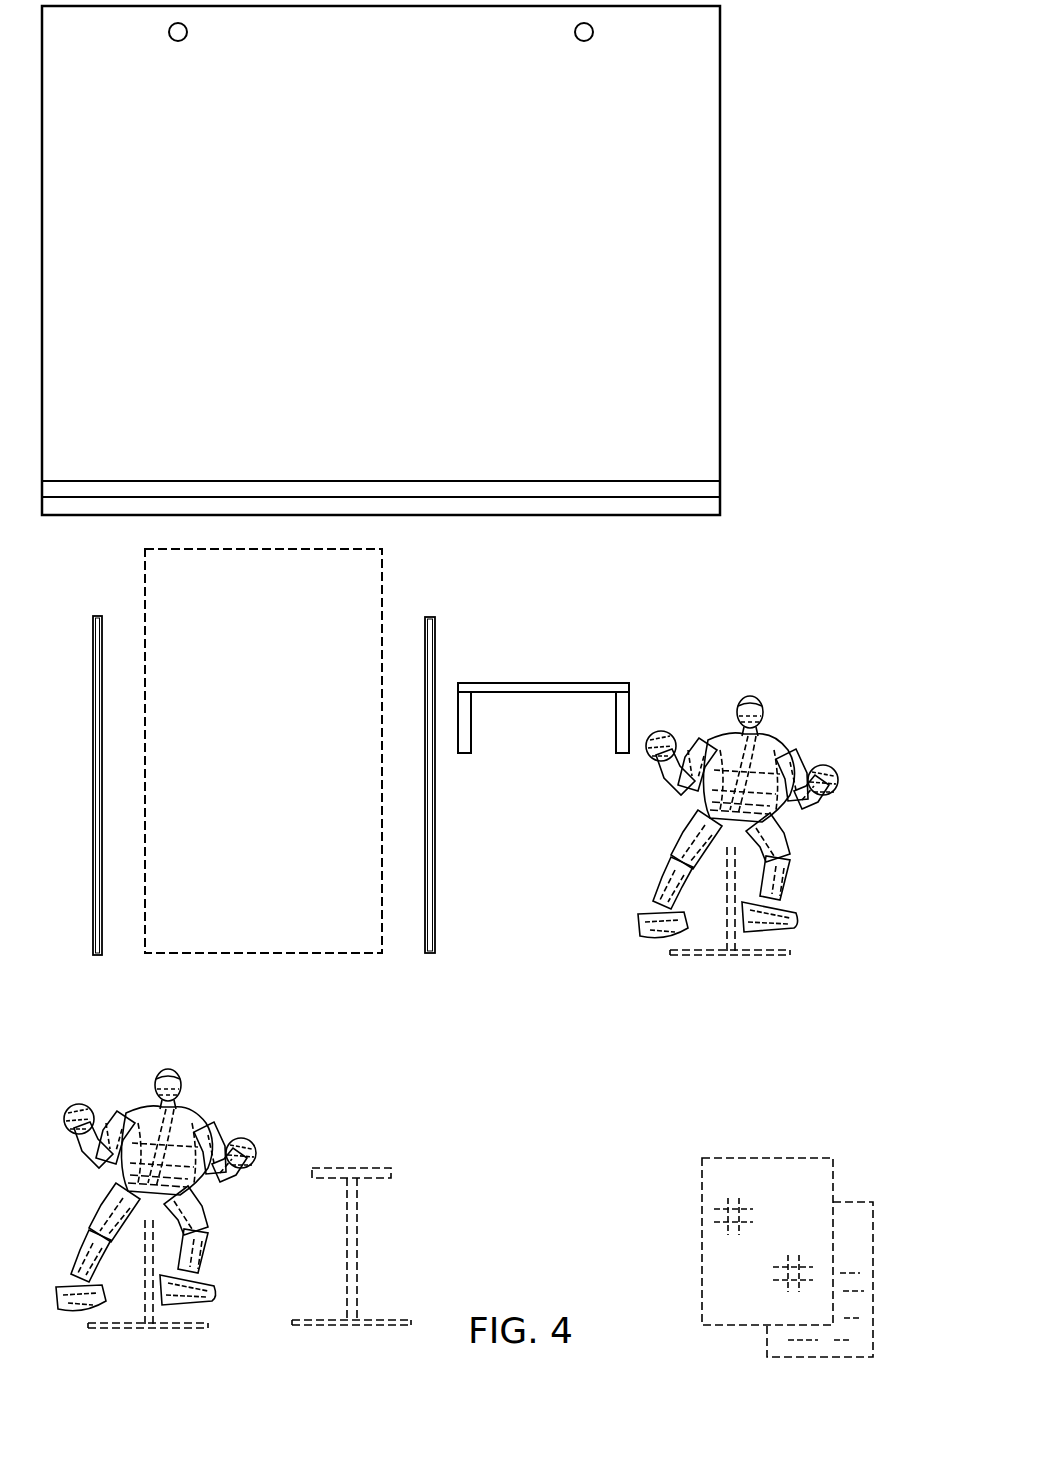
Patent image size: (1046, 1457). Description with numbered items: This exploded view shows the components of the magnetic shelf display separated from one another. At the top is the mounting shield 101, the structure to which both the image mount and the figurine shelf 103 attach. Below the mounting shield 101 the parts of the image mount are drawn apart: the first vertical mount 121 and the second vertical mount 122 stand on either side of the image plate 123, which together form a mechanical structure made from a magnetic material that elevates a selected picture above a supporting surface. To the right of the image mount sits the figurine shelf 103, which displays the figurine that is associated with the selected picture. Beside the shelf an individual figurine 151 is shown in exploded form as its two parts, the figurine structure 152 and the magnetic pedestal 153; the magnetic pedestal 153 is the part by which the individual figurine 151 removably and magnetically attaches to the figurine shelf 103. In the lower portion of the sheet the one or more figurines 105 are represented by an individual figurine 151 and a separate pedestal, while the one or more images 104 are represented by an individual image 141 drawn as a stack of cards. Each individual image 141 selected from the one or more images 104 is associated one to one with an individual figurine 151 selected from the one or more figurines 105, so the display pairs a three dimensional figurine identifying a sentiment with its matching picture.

The mounting shield 101 is at (720, 205).
The figurine shelf 103 is at (568, 683).
The one or more images 104 is at (682, 1265).
The one or more figurines 105 is at (449, 1159).
The first vertical mount 121 is at (93, 912).
The second vertical mount 122 is at (425, 930).
The image plate 123 is at (373, 612).
The individual image 141 is at (802, 1178).
The individual figurine 151 is at (490, 1012).
The figurine structure 152 is at (790, 843).
The magnetic pedestal 153 is at (764, 919).